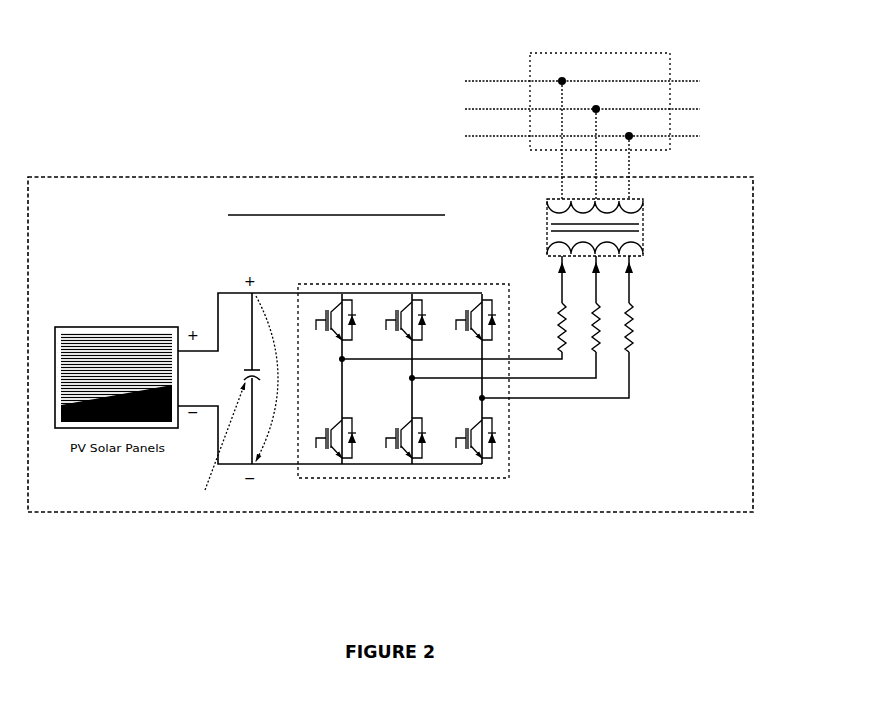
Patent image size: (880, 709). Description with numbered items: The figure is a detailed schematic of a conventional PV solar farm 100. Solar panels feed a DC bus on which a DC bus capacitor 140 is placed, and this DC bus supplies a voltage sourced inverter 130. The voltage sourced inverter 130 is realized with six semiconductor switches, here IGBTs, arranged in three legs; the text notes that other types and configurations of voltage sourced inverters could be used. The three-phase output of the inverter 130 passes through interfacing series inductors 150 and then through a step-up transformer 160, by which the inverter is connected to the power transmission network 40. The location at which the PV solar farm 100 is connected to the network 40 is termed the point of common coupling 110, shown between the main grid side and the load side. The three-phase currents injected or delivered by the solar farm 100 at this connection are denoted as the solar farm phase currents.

The PV solar farm 100 is at (133, 172).
The DC bus capacitor 140 is at (248, 320).
The voltage sourced inverter 130 is at (360, 280).
The interfacing series inductors 150 is at (583, 347).
The step-up transformer 160 is at (655, 221).
The network 40 is at (486, 80).
The point of common coupling 110 is at (660, 53).